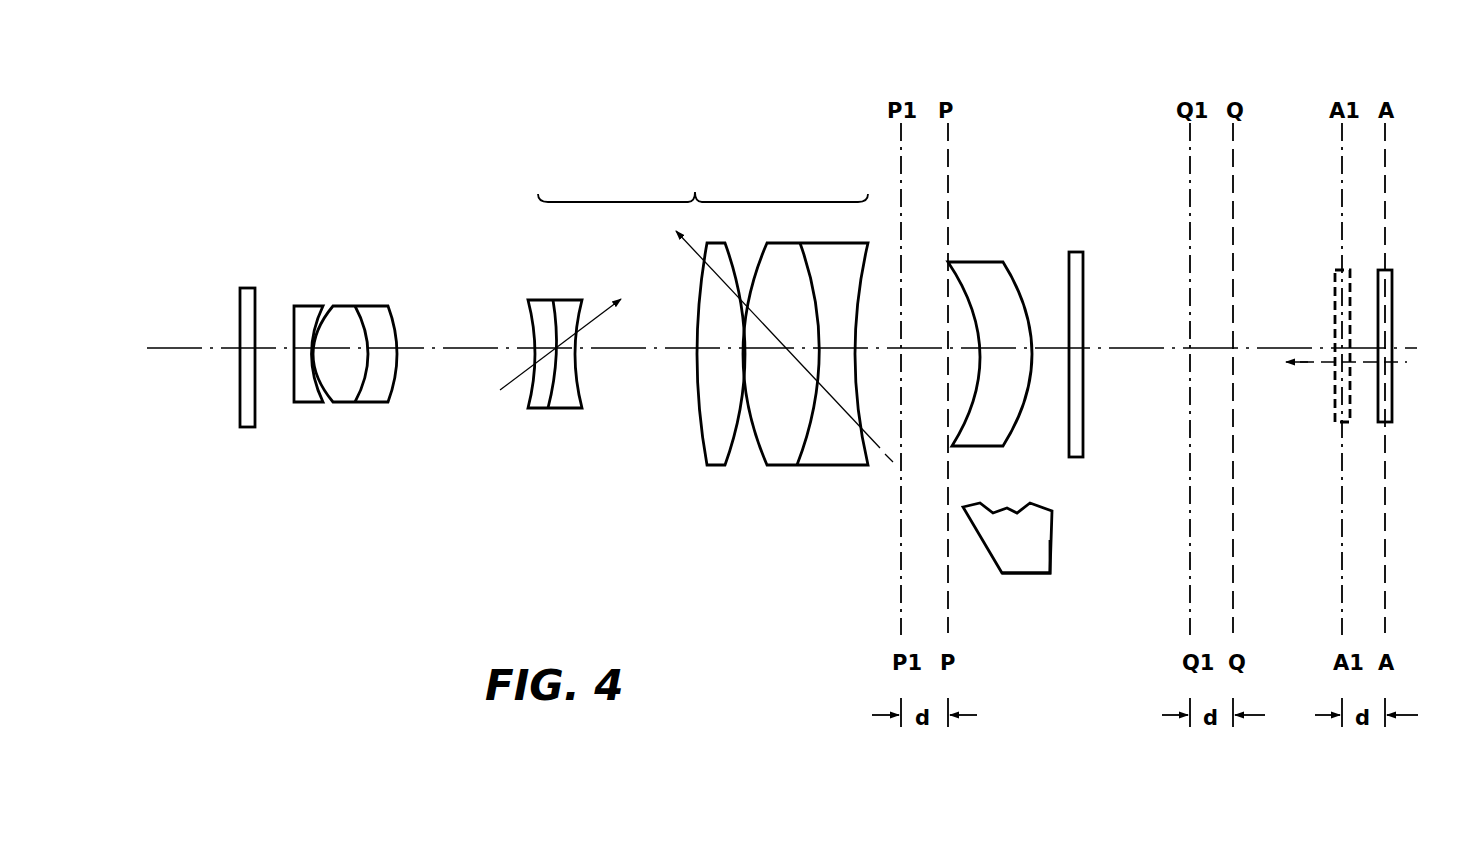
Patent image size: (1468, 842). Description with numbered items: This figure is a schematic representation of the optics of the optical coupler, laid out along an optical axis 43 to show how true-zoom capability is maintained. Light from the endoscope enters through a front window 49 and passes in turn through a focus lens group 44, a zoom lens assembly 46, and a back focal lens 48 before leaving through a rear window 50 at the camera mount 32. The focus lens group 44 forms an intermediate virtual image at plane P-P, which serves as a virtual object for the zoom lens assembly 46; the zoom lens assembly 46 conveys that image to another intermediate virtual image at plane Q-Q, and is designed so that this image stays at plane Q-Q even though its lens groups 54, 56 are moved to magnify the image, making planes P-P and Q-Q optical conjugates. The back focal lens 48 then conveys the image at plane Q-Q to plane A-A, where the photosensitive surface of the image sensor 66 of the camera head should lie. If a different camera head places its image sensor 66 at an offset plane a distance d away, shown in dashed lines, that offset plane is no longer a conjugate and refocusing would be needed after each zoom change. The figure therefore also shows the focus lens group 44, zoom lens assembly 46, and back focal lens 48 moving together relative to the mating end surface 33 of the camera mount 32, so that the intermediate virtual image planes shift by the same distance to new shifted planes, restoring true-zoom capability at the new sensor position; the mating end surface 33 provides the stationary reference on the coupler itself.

The optical axis 43 is at (186, 348).
The front window 49 is at (250, 288).
The focus lens group 44 is at (383, 407).
The lens group 54 is at (560, 298).
The zoom lens assembly 46 is at (703, 176).
The lens group 56 is at (820, 473).
The back focal lens 48 is at (983, 446).
The rear window 50 is at (1083, 252).
The camera mount 32 is at (1030, 543).
The mating end surface 33 is at (1052, 558).
The image sensor 66 is at (1394, 299).